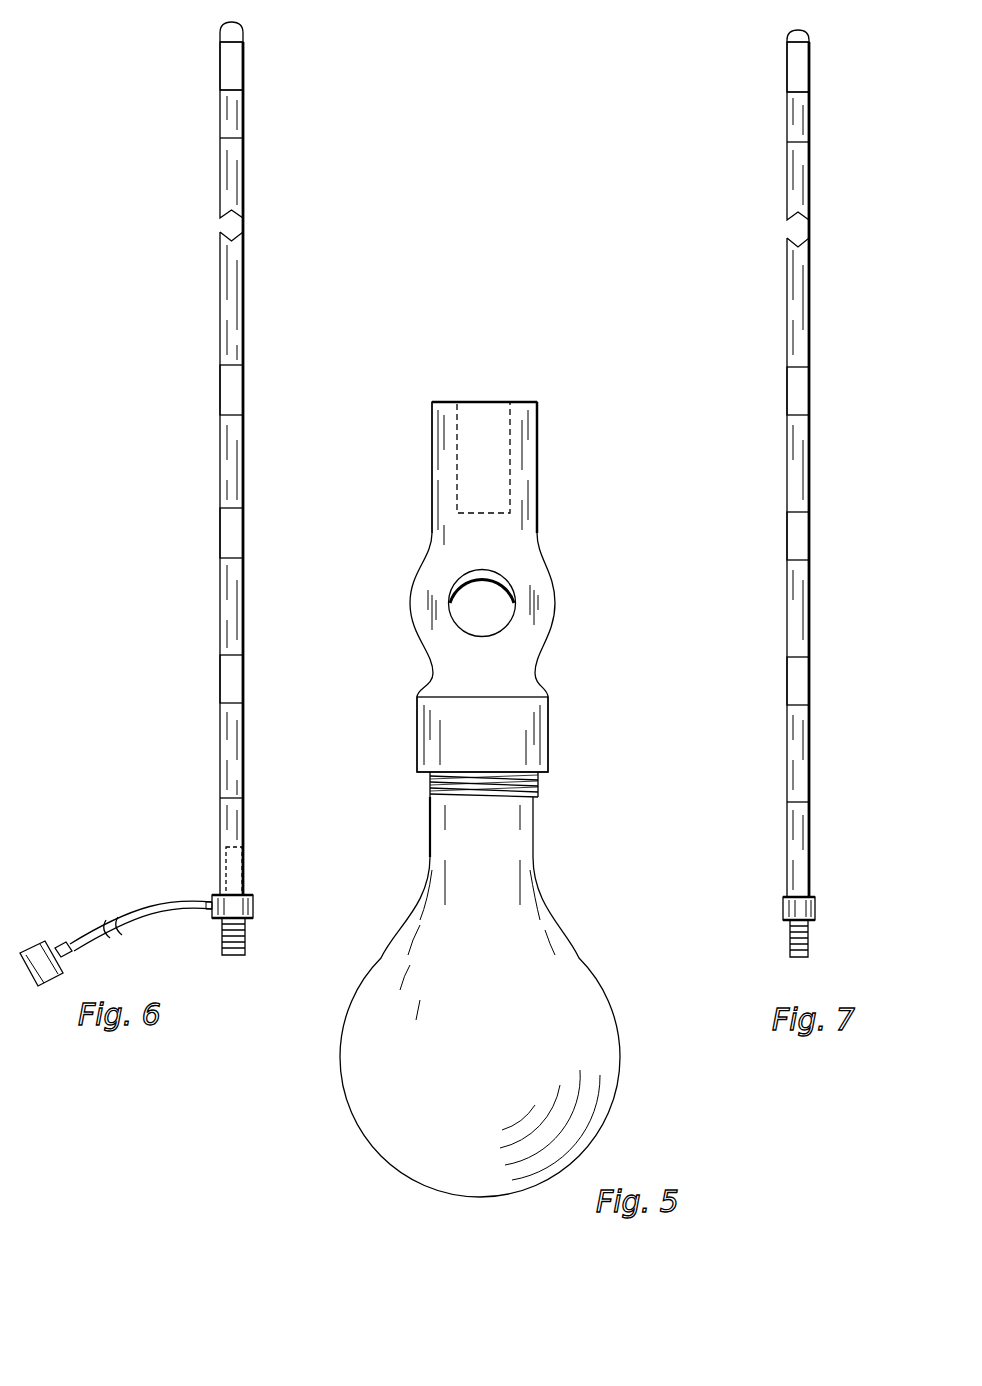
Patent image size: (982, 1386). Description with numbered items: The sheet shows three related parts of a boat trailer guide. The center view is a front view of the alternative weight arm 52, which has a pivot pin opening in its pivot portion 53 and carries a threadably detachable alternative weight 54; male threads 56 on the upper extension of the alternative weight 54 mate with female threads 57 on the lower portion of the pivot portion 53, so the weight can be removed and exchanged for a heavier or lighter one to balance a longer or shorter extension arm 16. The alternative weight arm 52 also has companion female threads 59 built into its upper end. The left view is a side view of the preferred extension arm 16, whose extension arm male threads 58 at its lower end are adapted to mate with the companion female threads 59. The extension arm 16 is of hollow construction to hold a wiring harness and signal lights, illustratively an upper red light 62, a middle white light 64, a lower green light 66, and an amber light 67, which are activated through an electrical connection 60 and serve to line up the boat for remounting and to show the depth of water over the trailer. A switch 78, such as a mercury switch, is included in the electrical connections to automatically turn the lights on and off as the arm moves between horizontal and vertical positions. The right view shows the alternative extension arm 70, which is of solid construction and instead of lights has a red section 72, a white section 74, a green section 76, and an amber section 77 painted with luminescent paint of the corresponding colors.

In FIG. 6, the extension arm 16 is at (222, 284).
In FIG. 5, the alternative weight arm 52 is at (490, 557).
In FIG. 5, the pivot portion 53 is at (437, 566).
In FIG. 5, the alternative weight 54 is at (413, 1068).
In FIG. 5, the male threads 56 is at (540, 795).
In FIG. 5, the female threads 57 is at (553, 720).
In FIG. 6, the extension arm male threads 58 is at (246, 937).
In FIG. 5, the companion female threads 59 is at (462, 428).
In FIG. 6, the electrical connection 60 is at (170, 905).
In FIG. 6, the upper red light 62 is at (232, 66).
In FIG. 6, the middle white light 64 is at (237, 397).
In FIG. 6, the lower green light 66 is at (230, 541).
In FIG. 6, the amber light 67 is at (242, 689).
In FIG. 7, the alternative extension arm 70 is at (810, 746).
In FIG. 7, the red section 72 is at (800, 67).
In FIG. 7, the white section 74 is at (797, 395).
In FIG. 7, the green section 76 is at (800, 533).
In FIG. 7, the amber section 77 is at (795, 683).
In FIG. 6, the switch 78 is at (241, 871).